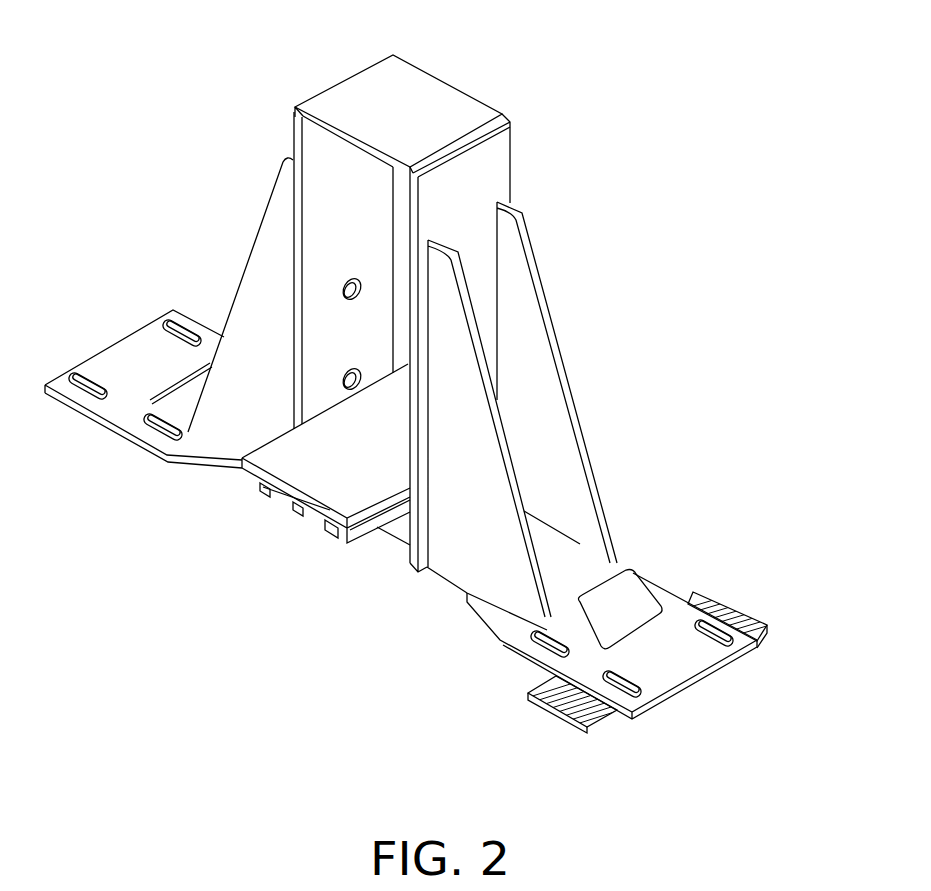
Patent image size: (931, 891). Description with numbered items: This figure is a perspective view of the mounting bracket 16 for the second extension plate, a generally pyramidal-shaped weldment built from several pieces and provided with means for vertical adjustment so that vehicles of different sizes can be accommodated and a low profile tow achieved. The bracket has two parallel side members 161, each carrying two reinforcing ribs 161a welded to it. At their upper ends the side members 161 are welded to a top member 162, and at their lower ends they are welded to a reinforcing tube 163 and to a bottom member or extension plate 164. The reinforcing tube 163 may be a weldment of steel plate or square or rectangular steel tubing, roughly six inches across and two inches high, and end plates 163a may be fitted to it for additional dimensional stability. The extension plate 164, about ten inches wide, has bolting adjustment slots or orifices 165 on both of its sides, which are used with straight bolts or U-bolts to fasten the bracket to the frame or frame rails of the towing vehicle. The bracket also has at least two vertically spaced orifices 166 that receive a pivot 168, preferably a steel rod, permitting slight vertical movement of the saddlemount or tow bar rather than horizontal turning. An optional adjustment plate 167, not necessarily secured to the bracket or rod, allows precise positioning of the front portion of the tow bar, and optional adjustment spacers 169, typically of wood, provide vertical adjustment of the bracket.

The mounting bracket 16 is at (631, 218).
The side member 161 is at (338, 80).
The reinforcing rib 161a is at (285, 158).
The top member 162 is at (443, 80).
The reinforcing tube 163 is at (380, 535).
The end plate 163a is at (185, 383).
The extension plate 164 is at (120, 440).
The bolting adjustment slot 165 is at (82, 372).
The vertically spaced orifice 166 is at (345, 283).
The adjustment plate 167 is at (293, 496).
The pivot 168 is at (337, 540).
The adjustment spacer 169 is at (560, 713).